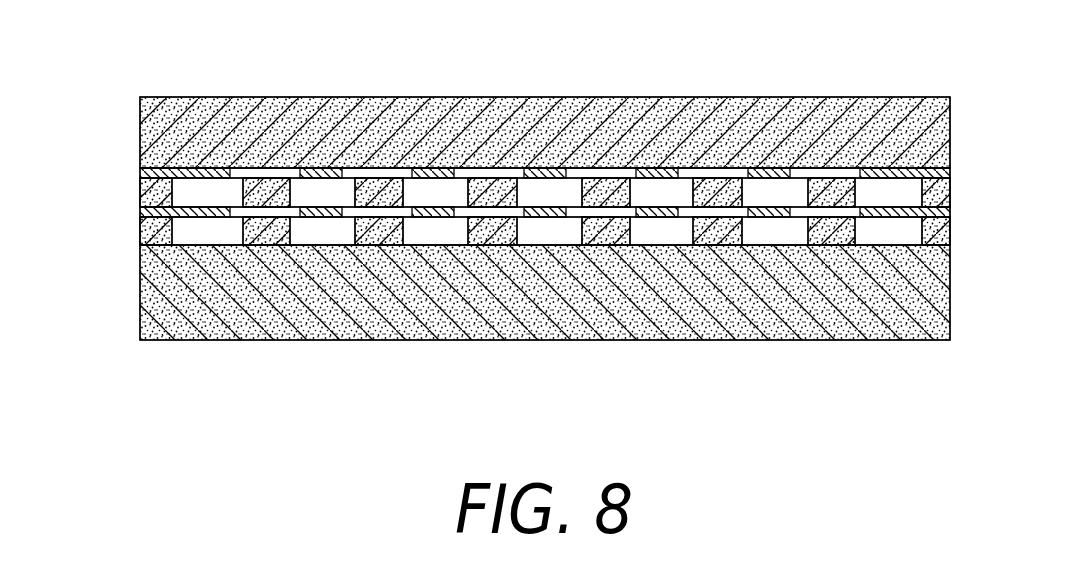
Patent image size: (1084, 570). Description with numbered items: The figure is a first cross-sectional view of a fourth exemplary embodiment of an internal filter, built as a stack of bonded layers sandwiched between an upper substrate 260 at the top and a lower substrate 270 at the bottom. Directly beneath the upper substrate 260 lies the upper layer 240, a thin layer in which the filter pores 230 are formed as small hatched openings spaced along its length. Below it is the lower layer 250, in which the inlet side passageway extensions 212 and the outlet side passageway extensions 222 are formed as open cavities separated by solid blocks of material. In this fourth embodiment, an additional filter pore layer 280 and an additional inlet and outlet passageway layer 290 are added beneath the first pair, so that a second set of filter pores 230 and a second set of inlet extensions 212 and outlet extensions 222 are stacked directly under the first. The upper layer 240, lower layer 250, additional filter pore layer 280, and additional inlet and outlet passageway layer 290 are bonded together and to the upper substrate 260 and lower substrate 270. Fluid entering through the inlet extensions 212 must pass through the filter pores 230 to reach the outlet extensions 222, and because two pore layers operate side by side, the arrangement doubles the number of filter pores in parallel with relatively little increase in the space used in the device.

The extensions of the inlet side passageway 212 is at (433, 217).
The extensions of the outlet side passageway 222 is at (790, 217).
The filter pores 230 is at (487, 208).
The upper layer 240 is at (142, 173).
The lower layer 250 is at (142, 195).
The upper substrate 260 is at (142, 133).
The lower substrate 270 is at (142, 292).
The additional filter pore layer 280 is at (142, 212).
The additional inlet and outlet passageway layer 290 is at (142, 233).